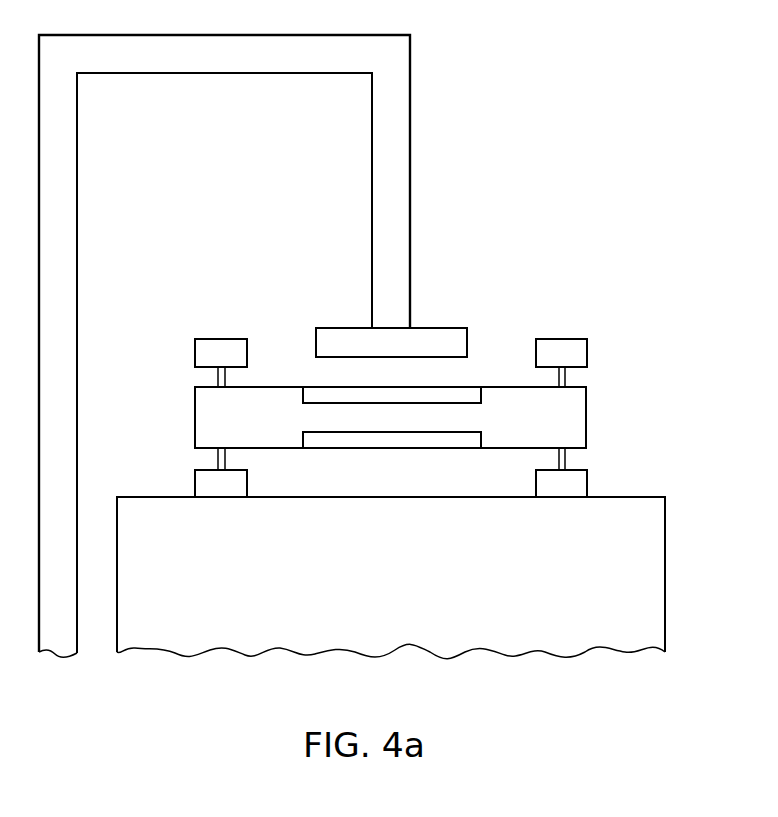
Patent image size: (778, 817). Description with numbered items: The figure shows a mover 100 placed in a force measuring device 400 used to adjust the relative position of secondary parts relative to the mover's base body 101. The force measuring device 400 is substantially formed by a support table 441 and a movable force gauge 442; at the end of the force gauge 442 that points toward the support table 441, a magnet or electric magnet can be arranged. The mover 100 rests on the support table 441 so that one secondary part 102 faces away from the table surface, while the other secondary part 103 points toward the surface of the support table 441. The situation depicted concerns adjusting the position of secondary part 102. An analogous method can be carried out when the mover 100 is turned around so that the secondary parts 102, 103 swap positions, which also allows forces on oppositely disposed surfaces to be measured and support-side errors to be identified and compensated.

The force measuring device 400 is at (636, 114).
The force gauge 442 is at (445, 338).
The support table 441 is at (652, 622).
The mover 100 is at (409, 418).
The base body 101 is at (577, 430).
The secondary part 102 is at (302, 397).
The secondary part 103 is at (302, 437).